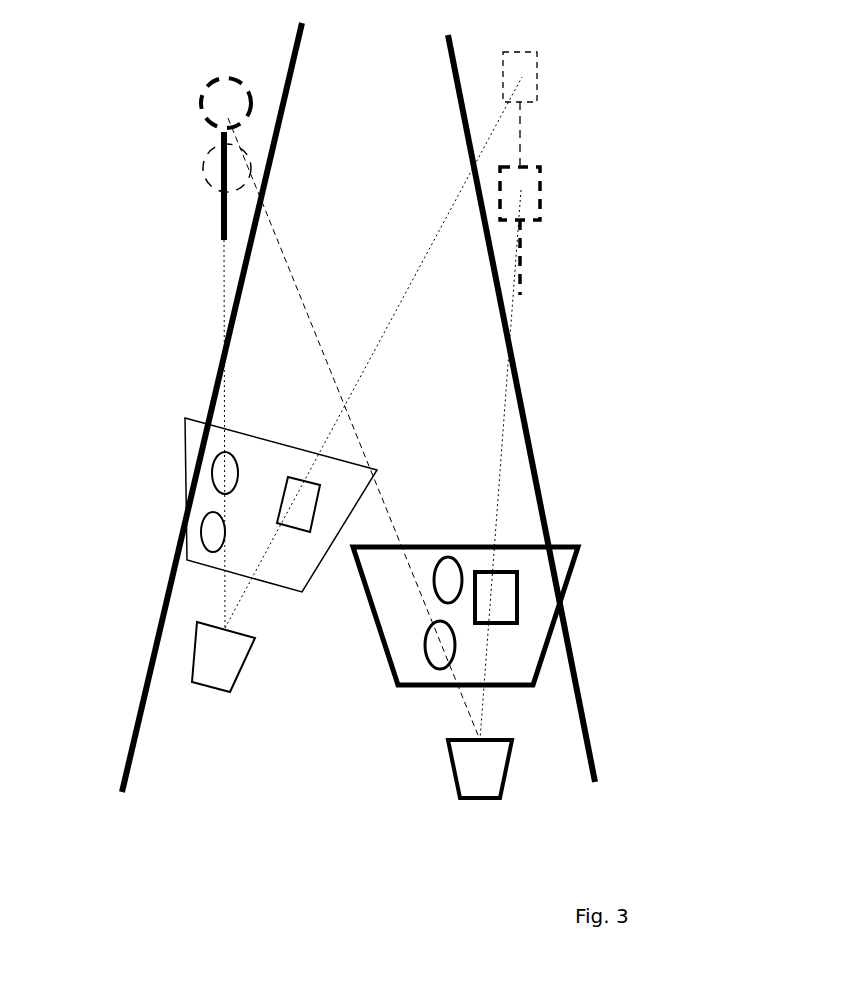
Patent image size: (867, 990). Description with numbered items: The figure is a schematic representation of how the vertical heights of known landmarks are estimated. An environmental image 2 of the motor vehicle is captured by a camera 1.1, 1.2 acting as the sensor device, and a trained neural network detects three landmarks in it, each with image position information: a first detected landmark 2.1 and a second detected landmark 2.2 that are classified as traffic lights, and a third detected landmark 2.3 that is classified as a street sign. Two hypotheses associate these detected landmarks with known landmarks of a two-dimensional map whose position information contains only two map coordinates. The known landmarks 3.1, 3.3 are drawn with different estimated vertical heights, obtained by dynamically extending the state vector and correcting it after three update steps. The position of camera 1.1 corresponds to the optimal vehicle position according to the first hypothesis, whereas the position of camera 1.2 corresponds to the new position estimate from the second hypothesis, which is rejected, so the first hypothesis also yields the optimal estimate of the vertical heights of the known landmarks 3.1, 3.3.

The camera 1.1 is at (503, 787).
The camera 1.2 is at (242, 673).
The environmental image 2 is at (186, 450).
The first detected landmark 2.1 is at (200, 528).
The second detected landmark 2.2 is at (235, 458).
The third detected landmark 2.3 is at (313, 510).
The known landmark 3.1 is at (198, 107).
The known landmark 3.3 is at (538, 80).